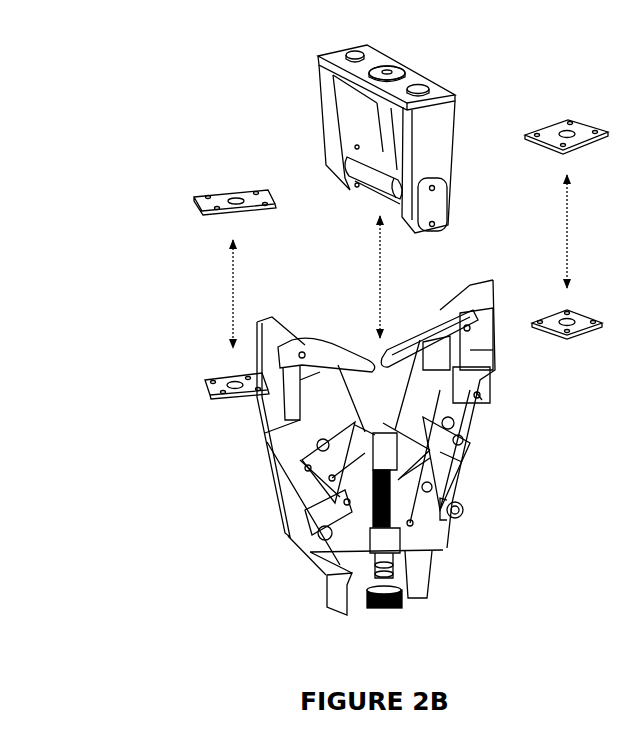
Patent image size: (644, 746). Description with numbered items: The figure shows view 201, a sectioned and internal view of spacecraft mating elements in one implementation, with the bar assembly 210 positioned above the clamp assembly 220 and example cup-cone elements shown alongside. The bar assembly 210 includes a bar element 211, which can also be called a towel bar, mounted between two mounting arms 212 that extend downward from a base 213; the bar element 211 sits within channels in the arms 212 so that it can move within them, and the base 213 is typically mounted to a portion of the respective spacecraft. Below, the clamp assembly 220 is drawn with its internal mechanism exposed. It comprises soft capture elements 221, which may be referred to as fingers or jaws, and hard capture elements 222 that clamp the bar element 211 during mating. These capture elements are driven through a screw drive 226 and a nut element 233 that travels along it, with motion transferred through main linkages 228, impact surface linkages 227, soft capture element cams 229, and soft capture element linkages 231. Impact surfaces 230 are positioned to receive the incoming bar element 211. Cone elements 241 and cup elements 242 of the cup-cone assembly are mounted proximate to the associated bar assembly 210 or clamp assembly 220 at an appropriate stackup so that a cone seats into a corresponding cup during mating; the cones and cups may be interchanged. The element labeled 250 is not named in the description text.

The view 201 is at (496, 36).
The bar assembly 210 is at (296, 62).
The bar element 211 is at (370, 195).
The mounting arms 212 is at (321, 132).
The base 213 is at (417, 72).
The clamp assembly 220 is at (243, 552).
The soft capture elements 221 is at (457, 328).
The hard capture elements 222 is at (451, 403).
The screw drive 226 is at (465, 505).
The impact surface linkages 227 is at (433, 459).
The main linkages 228 is at (462, 461).
The soft capture element cams 229 is at (496, 399).
The impact surfaces 230 is at (363, 432).
The soft capture element linkages 231 is at (494, 362).
The nut element 233 is at (412, 547).
The cone elements 241 is at (230, 189).
The cup elements 242 is at (225, 407).
The center post 250 is at (385, 401).